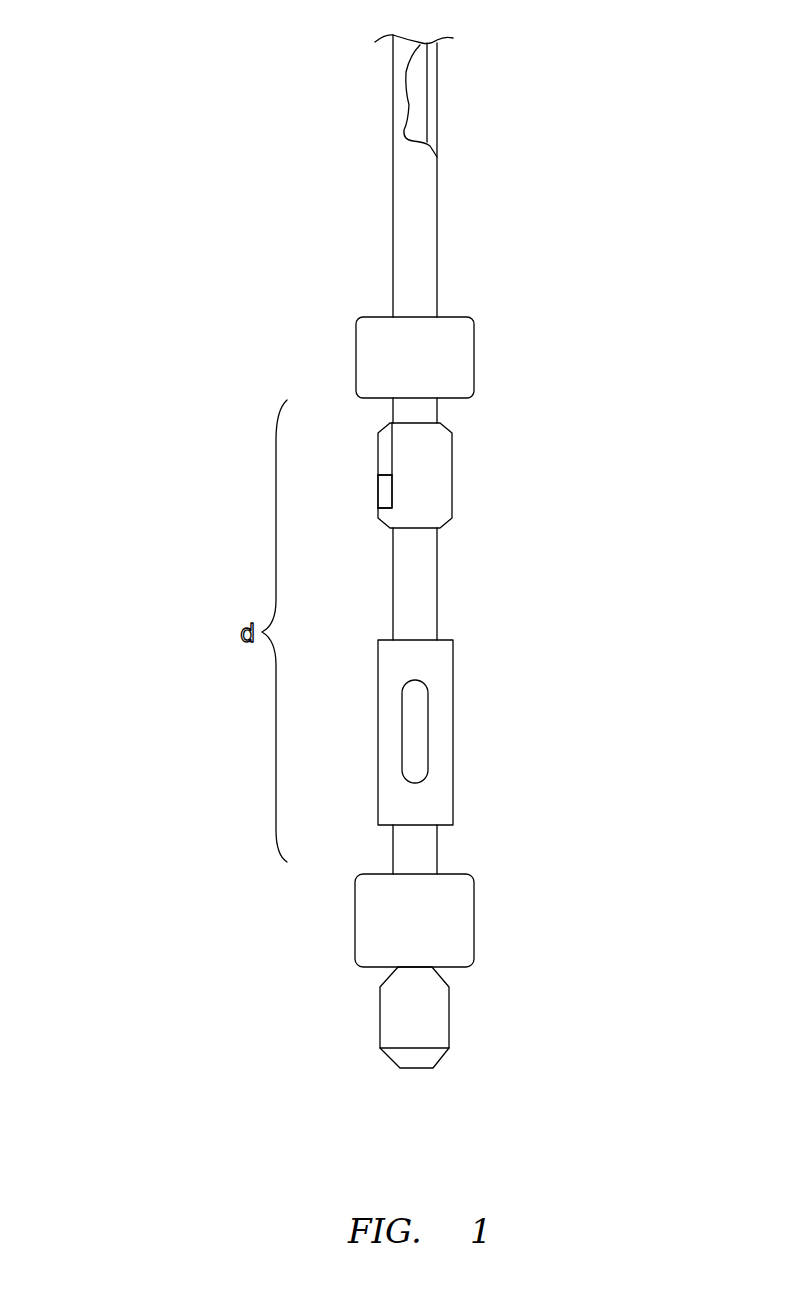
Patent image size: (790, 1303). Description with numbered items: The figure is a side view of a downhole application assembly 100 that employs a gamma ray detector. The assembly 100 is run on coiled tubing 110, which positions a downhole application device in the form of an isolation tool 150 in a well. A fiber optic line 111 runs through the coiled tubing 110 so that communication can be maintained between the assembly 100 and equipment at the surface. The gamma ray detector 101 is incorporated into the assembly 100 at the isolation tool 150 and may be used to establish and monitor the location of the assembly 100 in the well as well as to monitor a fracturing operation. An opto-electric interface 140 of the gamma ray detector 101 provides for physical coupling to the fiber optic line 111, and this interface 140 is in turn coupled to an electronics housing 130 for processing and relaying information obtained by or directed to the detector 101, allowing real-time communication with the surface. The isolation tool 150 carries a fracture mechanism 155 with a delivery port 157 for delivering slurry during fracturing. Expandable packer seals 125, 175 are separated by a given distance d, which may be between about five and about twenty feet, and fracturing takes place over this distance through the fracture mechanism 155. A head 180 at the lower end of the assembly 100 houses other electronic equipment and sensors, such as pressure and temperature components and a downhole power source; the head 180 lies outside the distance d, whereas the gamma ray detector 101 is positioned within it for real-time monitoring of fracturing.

The downhole application assembly 100 is at (138, 38).
The gamma ray detector 101 is at (442, 470).
The coiled tubing 110 is at (428, 235).
The fiber optic line 111 is at (430, 95).
The expandable packer seal 125 is at (368, 350).
The electronics housing 130 is at (385, 492).
The opto-electric interface 140 is at (385, 453).
The isolation tool 150 is at (558, 488).
The fracture mechanism 155 is at (443, 660).
The delivery port 157 is at (418, 738).
The expandable packer seal 175 is at (460, 913).
The head 180 is at (393, 1010).